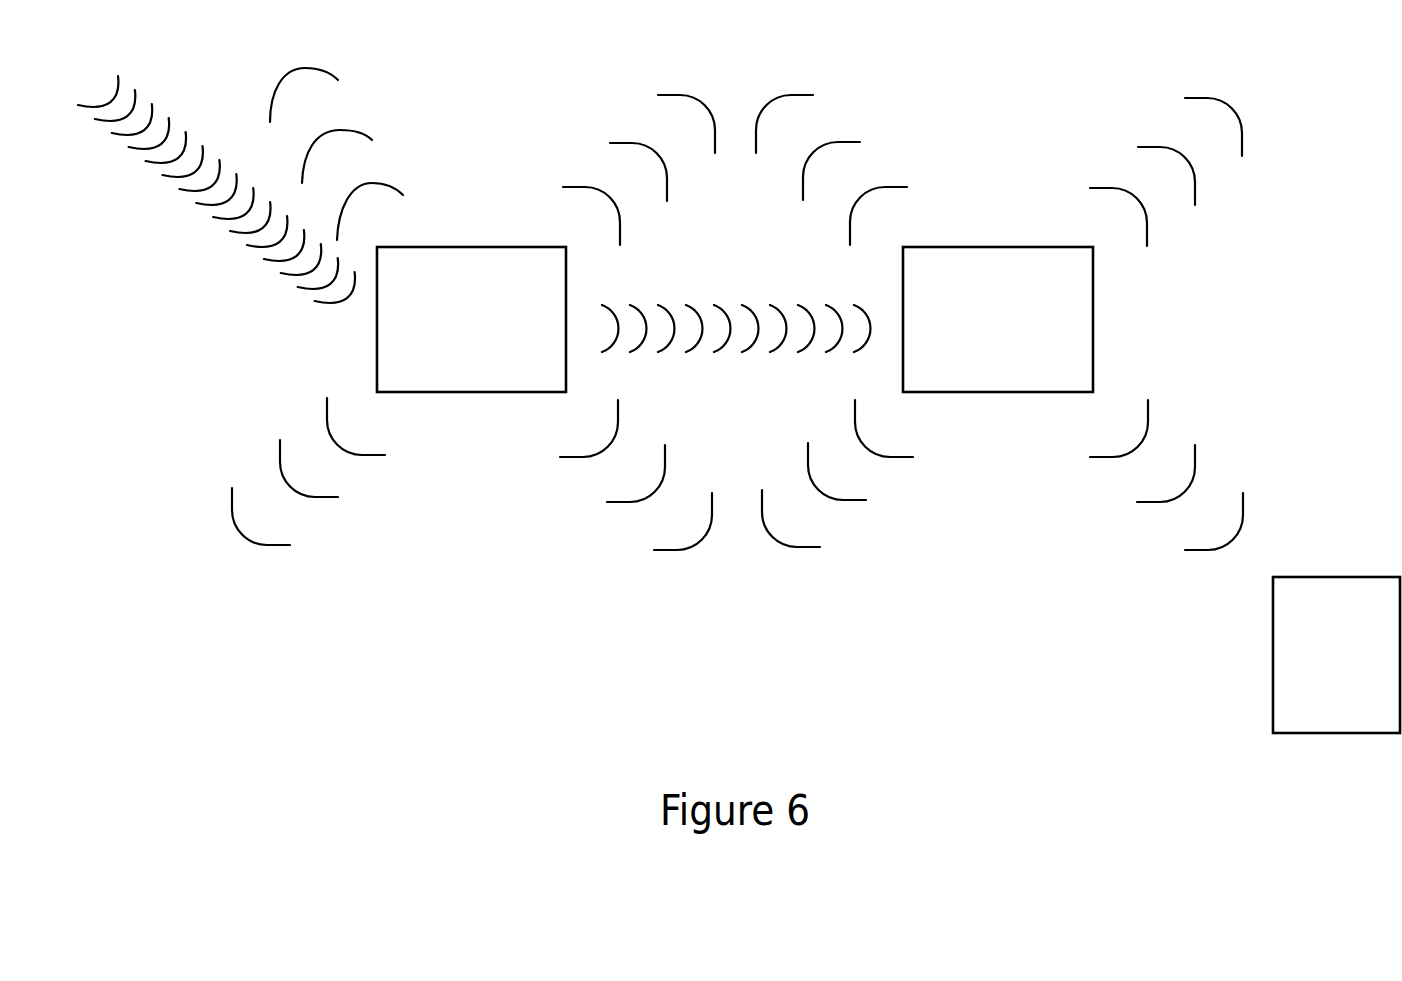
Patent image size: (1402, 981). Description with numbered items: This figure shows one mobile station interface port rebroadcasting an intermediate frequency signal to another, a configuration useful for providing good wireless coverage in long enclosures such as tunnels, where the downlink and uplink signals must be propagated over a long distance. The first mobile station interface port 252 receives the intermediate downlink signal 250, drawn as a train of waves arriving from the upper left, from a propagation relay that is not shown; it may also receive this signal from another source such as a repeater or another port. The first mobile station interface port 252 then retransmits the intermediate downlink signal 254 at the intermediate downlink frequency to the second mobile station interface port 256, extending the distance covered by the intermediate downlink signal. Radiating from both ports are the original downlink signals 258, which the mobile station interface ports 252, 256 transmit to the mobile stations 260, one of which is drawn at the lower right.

The intermediate downlink signal 250 is at (188, 136).
The first mobile station interface port 252 is at (450, 347).
The retransmitted intermediate downlink signal 254 is at (725, 309).
The mobile station interface port 256 is at (977, 347).
The original downlink signals 258 is at (350, 132).
The mobile station 260 is at (1316, 682).